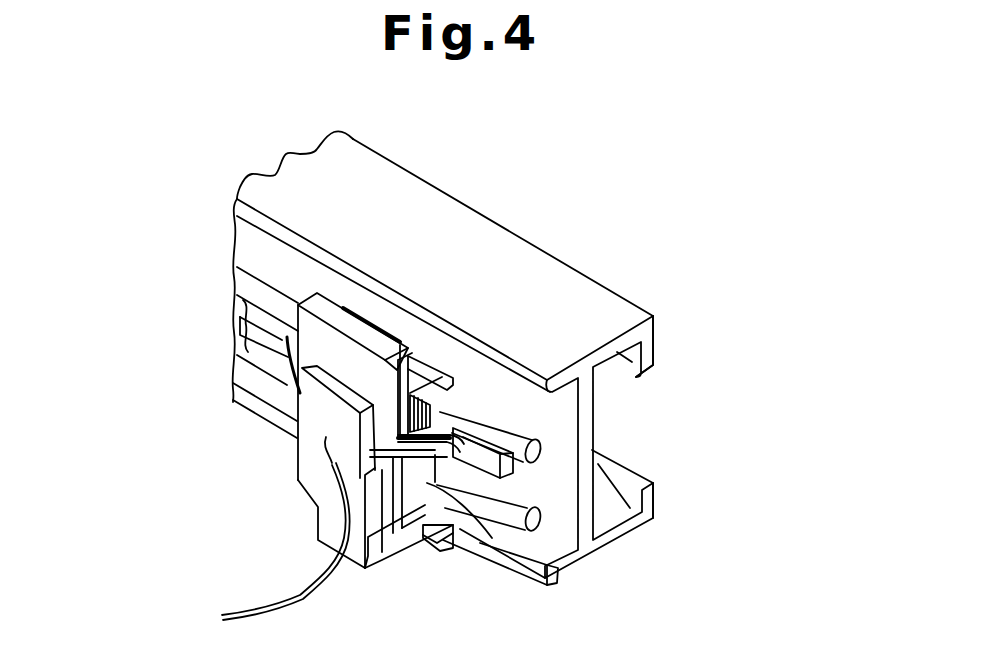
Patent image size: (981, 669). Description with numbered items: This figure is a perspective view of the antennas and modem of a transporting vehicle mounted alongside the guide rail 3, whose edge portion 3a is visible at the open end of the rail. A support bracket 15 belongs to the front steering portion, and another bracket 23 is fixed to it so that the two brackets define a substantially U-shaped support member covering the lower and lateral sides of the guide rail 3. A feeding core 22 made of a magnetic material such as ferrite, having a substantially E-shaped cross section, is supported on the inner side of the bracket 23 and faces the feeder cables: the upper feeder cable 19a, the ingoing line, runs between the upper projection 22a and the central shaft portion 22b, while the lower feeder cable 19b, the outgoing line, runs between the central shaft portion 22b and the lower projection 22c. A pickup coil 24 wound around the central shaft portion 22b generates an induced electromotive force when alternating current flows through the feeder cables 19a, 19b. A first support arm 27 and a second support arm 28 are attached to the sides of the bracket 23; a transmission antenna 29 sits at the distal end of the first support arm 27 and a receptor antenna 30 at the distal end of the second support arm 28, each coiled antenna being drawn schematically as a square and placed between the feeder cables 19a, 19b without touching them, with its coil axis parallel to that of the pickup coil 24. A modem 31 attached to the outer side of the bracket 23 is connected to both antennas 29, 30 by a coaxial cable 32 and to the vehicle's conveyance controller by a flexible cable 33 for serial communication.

The guide rail 3 is at (602, 293).
The rail lip 3a is at (655, 350).
The support bracket 15 is at (455, 552).
The upper feeder cable 19a is at (593, 447).
The lower feeder cable 19b is at (552, 570).
The feeding core 22 is at (397, 352).
The upper projection 22a is at (427, 360).
The central shaft portion 22b is at (445, 407).
The lower projection 22c is at (420, 535).
The bracket 23 is at (293, 456).
The pickup coil 24 is at (428, 402).
The first support arm 27 is at (297, 348).
The second support arm 28 is at (483, 528).
The transmission antenna 29 is at (242, 314).
The receptor antenna 30 is at (514, 484).
The modem 31 is at (317, 485).
The coaxial cable 32 is at (246, 354).
The flexible cable 33 is at (277, 597).